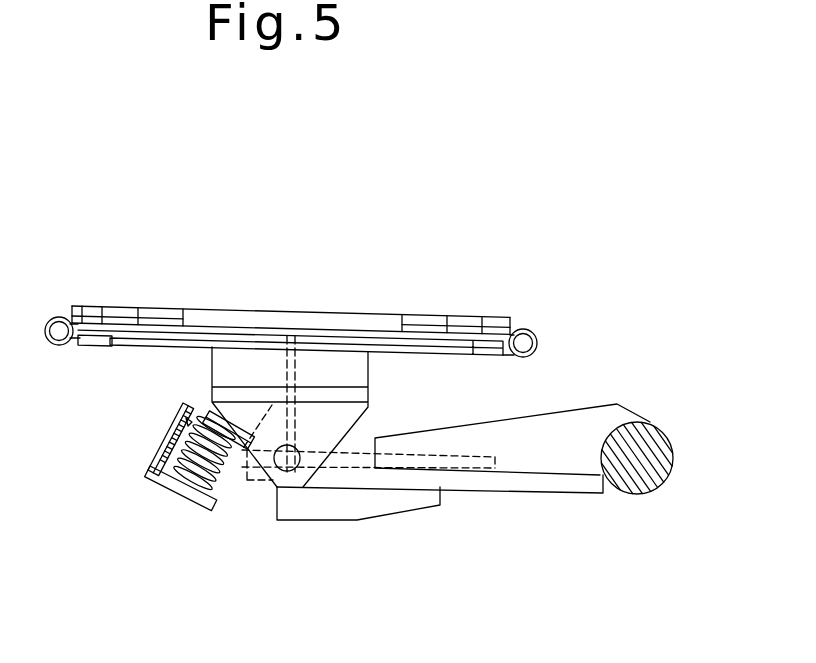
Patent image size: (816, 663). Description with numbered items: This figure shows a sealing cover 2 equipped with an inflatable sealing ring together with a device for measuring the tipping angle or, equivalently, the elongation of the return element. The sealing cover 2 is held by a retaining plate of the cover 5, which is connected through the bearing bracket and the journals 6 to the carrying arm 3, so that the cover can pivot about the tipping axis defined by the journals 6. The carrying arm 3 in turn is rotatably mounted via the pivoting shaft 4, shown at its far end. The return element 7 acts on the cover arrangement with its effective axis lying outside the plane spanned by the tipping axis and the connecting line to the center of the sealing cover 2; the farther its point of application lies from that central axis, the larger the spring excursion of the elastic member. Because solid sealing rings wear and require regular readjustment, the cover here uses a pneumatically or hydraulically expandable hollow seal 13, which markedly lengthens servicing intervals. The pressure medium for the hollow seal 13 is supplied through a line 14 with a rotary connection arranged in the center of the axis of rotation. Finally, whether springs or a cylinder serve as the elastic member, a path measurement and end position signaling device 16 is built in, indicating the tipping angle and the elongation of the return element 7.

The sealing cover 2 is at (207, 308).
The hollow seal 13 is at (59, 320).
The line 14 is at (293, 378).
The retaining plate of the cover 5 is at (368, 372).
The carrying arm 3 is at (457, 483).
The pivoting shaft 4 is at (648, 487).
The journals 6 is at (285, 455).
The path measurement and/or end position signaling device 16 is at (167, 430).
The return element 7 is at (197, 482).